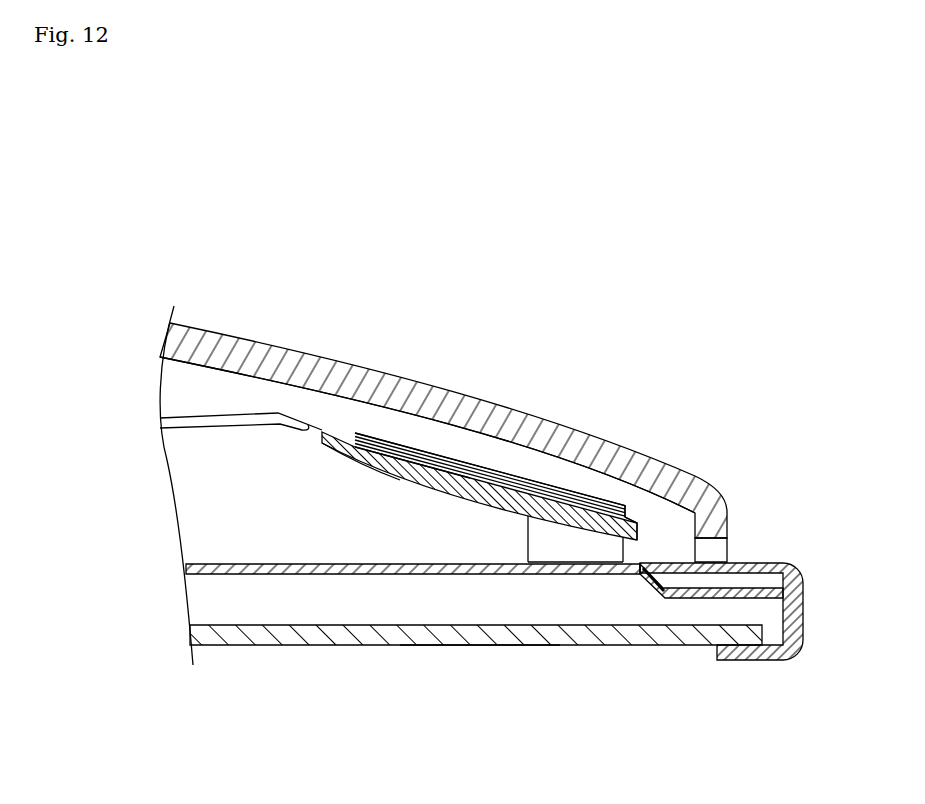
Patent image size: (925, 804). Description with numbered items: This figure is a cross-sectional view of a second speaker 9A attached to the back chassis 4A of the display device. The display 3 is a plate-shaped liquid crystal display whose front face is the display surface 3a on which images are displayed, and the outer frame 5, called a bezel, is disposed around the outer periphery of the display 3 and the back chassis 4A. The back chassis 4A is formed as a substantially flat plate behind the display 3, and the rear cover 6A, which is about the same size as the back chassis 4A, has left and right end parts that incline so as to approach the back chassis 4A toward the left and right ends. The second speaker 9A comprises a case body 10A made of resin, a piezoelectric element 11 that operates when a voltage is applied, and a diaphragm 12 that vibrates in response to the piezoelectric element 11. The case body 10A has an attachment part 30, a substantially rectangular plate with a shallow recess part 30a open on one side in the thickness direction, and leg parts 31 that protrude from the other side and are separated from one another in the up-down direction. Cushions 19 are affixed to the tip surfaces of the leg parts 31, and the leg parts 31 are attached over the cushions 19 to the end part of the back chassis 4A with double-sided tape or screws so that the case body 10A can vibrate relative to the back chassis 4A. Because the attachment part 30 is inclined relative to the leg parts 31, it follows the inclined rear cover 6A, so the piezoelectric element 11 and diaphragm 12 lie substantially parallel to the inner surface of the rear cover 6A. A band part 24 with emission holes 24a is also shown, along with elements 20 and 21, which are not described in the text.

The display 3 is at (547, 646).
The display surface 3a is at (482, 646).
The back chassis 4A is at (297, 564).
The outer frame 5 is at (772, 661).
The rear cover 6A is at (323, 361).
The second speaker 9A is at (340, 452).
The case body 10A is at (382, 468).
The piezoelectric element 11 is at (533, 484).
The diaphragm 12 is at (603, 512).
The cushion 19 is at (594, 565).
The display unit 20 is at (320, 428).
The holding plate 21 is at (193, 412).
The band part 24 is at (363, 371).
The emission hole 24a is at (712, 545).
The attachment part 30 is at (427, 488).
The recess part 30a is at (624, 513).
The leg part 31 is at (540, 543).